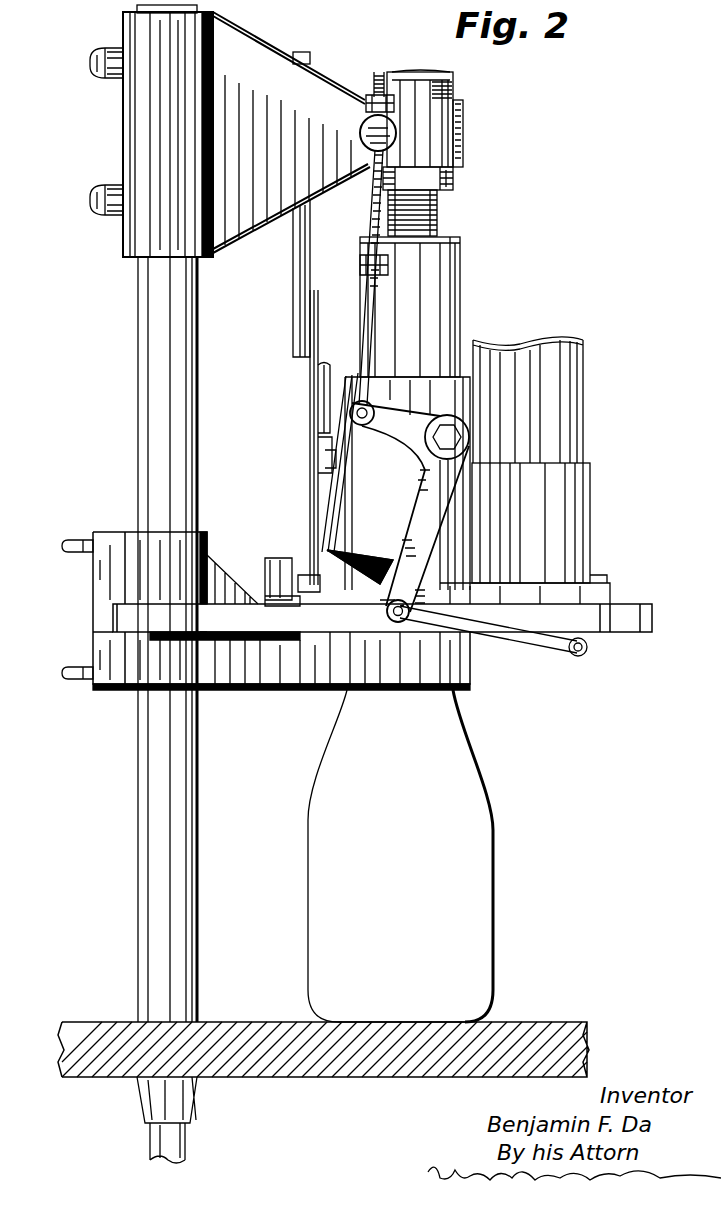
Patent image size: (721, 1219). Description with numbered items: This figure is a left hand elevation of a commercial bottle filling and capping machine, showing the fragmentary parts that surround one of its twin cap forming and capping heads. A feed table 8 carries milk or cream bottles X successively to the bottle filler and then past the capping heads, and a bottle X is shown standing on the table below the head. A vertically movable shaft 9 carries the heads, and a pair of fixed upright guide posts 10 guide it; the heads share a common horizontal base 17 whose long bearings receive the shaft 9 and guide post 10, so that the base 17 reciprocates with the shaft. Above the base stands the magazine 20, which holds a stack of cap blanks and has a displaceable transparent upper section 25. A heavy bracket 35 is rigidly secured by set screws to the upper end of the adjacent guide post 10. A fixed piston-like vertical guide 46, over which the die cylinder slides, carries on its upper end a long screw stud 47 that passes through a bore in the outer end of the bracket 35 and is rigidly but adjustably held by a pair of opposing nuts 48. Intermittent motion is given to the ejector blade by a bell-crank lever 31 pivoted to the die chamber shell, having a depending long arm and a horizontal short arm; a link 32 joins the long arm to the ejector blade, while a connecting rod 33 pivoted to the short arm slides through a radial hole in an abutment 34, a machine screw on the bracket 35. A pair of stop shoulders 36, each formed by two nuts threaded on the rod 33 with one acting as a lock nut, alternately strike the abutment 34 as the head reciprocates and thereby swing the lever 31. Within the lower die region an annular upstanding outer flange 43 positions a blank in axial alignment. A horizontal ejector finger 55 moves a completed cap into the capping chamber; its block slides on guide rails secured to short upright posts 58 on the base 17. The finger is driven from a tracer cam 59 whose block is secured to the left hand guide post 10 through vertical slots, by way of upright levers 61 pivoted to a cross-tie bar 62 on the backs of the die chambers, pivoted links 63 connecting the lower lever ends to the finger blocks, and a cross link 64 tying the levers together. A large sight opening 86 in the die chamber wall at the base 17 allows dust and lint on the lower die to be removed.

The feed table 8 is at (220, 1050).
The vertically movable shaft 9 is at (188, 1142).
The fixed upright guide posts 10 is at (147, 360).
The horizontal base 17 is at (268, 665).
The magazine 20 is at (605, 520).
The transparent upper section 25 is at (567, 432).
The bell-crank lever 31 is at (437, 481).
The link 32 is at (513, 646).
The connecting rod 33 is at (370, 326).
The abutment 34 is at (387, 134).
The bracket 35 is at (291, 132).
The stop shoulders 36 is at (400, 100).
The annular upstanding outer flange 43 is at (400, 623).
The piston-like vertical guide 46 is at (462, 253).
The screw stud 47 is at (438, 207).
The opposing nuts 48 is at (462, 98).
The ejector finger 55 is at (346, 546).
The upright posts 58 is at (277, 568).
The tracer cam 59 is at (303, 245).
The upright levers 61 is at (313, 376).
The cross-tie bar 62 is at (324, 388).
The pivoted links 63 is at (306, 574).
The cross link 64 is at (322, 448).
The sight opening 86 is at (366, 580).
The bottle X is at (450, 830).